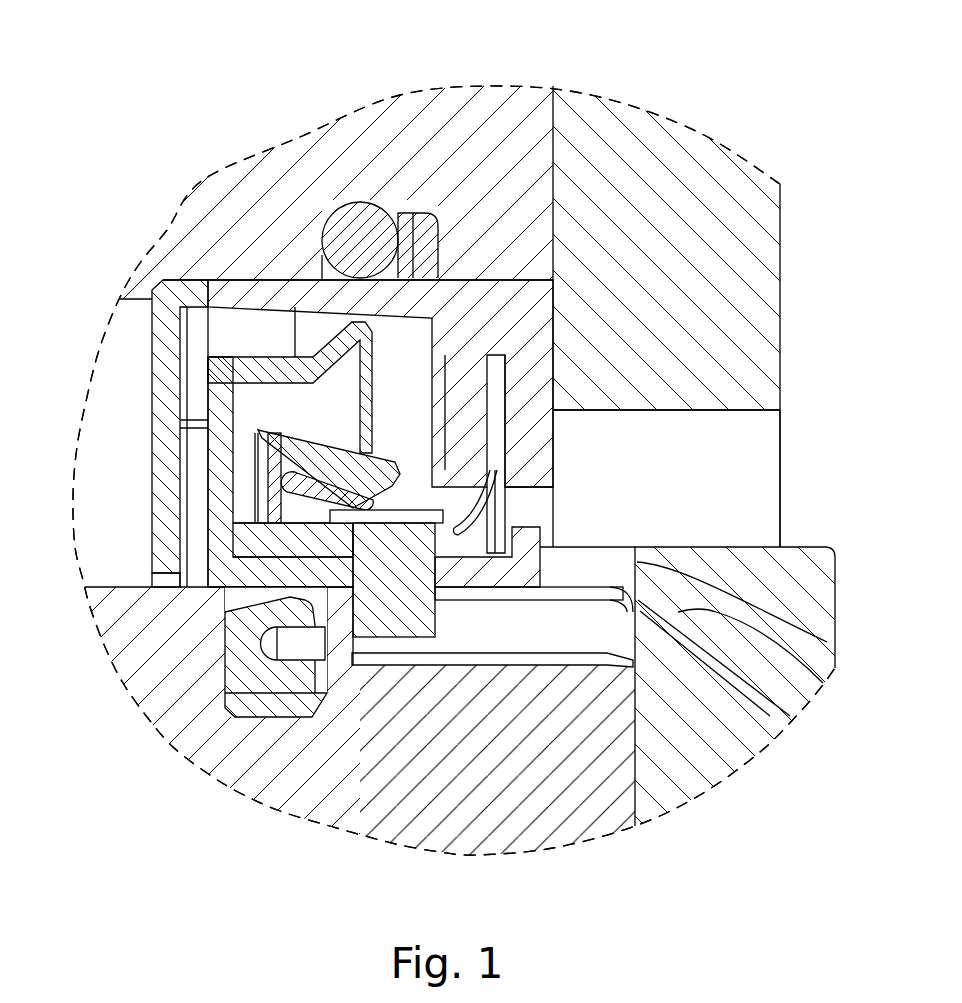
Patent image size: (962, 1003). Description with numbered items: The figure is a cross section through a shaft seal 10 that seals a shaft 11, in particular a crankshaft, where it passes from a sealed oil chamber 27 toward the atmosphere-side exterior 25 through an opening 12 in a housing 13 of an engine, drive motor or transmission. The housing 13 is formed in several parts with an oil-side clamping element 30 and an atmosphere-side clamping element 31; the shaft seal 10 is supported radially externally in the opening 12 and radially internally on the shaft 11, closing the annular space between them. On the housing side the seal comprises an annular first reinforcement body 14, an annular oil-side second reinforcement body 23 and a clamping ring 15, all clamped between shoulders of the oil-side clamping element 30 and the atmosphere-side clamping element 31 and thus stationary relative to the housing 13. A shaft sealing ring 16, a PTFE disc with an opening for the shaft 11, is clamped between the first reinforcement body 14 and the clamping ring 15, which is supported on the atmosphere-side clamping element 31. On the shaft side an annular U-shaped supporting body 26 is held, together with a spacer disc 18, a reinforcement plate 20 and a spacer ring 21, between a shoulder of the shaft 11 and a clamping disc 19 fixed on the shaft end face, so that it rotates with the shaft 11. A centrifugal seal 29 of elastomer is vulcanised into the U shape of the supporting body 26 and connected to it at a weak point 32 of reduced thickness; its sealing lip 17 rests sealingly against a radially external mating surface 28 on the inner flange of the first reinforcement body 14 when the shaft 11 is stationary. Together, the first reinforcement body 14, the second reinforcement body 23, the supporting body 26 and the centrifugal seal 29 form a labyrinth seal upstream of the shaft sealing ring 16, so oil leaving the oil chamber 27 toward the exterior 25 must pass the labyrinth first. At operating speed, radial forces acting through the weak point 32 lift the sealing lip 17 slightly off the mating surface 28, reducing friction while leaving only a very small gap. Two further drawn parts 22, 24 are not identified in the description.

The shaft seal 10 is at (118, 332).
The shaft 11 is at (107, 603).
The opening 12 is at (140, 522).
The housing 13 is at (343, 100).
The first reinforcement body 14 is at (263, 290).
The clamping ring 15 is at (525, 337).
The shaft sealing ring 16 is at (497, 367).
The sealing lip 17 is at (422, 548).
The spacer disc 18 is at (827, 642).
The clamping disc 19 is at (823, 683).
The reinforcement plate 20 is at (805, 705).
The spacer ring 21 is at (388, 488).
The retaining clip 22 is at (223, 596).
The second reinforcement body 23 is at (170, 457).
The O-ring 24 is at (357, 238).
The atmosphere-side exterior 25 is at (832, 518).
The supporting body 26 is at (222, 483).
The oil chamber 27 is at (24, 568).
The mating surface 28 is at (440, 457).
The centrifugal seal 29 is at (313, 450).
The oil-side clamping element 30 is at (190, 258).
The atmosphere-side clamping element 31 is at (668, 258).
The weak point 32 is at (300, 480).